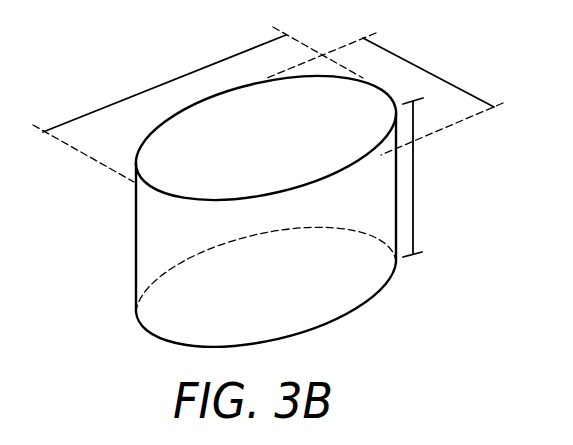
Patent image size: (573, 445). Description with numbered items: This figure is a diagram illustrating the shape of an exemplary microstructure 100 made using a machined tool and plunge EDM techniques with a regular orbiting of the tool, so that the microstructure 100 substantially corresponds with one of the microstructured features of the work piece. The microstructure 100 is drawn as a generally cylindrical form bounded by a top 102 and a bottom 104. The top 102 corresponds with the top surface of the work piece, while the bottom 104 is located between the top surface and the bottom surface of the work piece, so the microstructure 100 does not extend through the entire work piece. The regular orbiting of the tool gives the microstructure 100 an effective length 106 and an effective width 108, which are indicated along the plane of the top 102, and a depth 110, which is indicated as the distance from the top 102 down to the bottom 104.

The microstructure 100 is at (145, 258).
The top 102 is at (148, 190).
The bottom 104 is at (158, 343).
The effective length 106 is at (160, 84).
The effective width 108 is at (408, 58).
The depth 110 is at (415, 206).